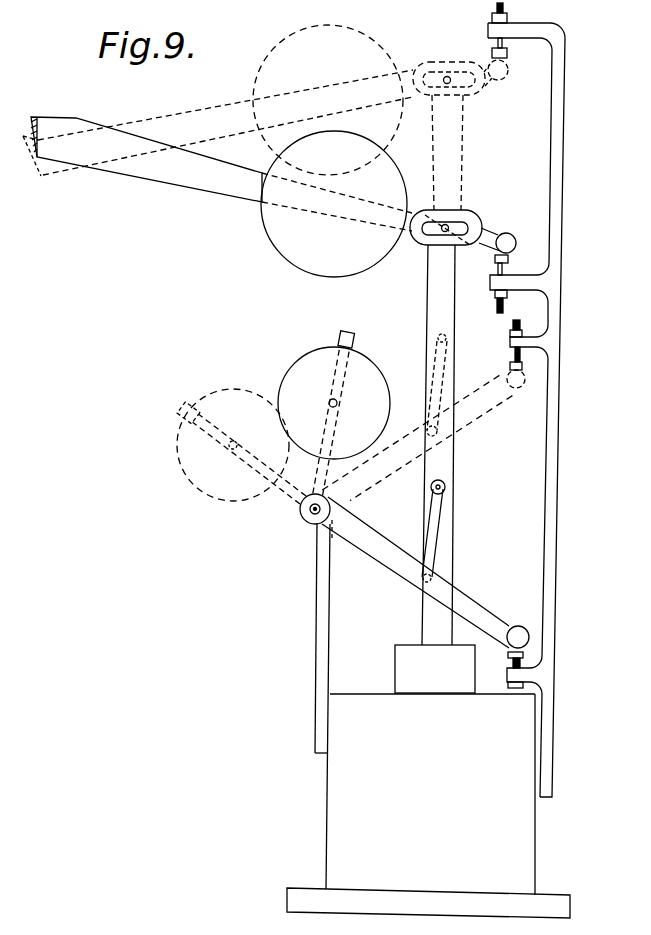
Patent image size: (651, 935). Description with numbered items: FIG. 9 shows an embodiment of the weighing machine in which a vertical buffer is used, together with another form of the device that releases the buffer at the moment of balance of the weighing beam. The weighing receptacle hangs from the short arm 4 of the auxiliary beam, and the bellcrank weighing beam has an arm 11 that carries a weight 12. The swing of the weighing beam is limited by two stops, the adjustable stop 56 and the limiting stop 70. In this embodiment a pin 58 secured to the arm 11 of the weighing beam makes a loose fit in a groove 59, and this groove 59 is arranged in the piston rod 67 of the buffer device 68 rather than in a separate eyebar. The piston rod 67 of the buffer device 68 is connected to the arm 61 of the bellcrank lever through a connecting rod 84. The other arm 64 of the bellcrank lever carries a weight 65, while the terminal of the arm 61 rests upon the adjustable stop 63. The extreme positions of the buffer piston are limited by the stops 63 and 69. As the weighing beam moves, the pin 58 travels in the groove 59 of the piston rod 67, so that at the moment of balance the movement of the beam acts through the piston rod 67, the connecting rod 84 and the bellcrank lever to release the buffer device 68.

The short arm 4 is at (218, 123).
The arm of the weighing beam 11 is at (196, 172).
The weight 12 is at (313, 263).
The adjustable stop 56 is at (506, 270).
The pin 58 is at (456, 224).
The groove 59 is at (468, 227).
The arm of the bellcrank lever 61 is at (402, 567).
The adjustable stop 63 is at (510, 665).
The arm of the bellcrank lever 64 is at (343, 334).
The weight 65 is at (318, 360).
The piston rod 67 is at (437, 296).
The buffer device 68 is at (337, 822).
The stop 69 is at (513, 351).
The limiting stop 70 is at (460, 49).
The connecting rod 84 is at (436, 523).